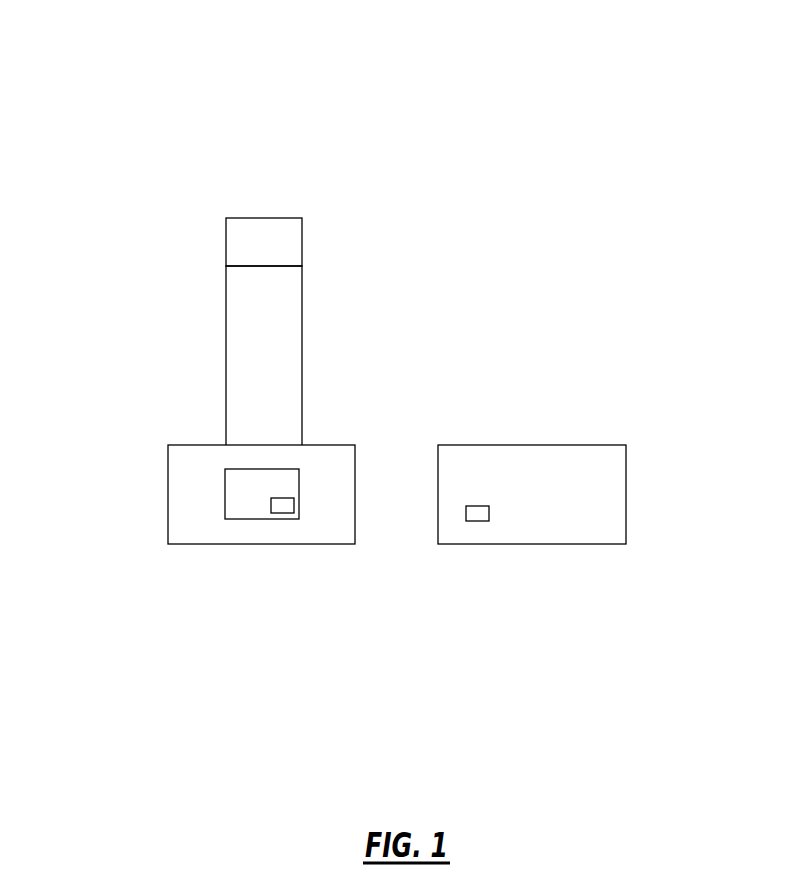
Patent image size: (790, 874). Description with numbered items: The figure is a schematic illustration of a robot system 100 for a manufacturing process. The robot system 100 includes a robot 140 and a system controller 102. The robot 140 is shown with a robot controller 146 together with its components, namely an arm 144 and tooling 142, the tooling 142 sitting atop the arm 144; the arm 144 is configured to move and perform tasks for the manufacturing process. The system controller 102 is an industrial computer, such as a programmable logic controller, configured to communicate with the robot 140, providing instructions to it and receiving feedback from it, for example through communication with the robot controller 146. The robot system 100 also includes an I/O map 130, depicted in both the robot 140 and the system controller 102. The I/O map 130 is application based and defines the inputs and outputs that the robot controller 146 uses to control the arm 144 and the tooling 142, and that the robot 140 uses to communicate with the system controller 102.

The robot system 100 is at (395, 66).
The system controller 102 is at (615, 443).
The I/O map 130 is at (282, 513).
The robot 140 is at (134, 264).
The tooling 142 is at (263, 217).
The arm 144 is at (300, 342).
The robot controller 146 is at (260, 522).